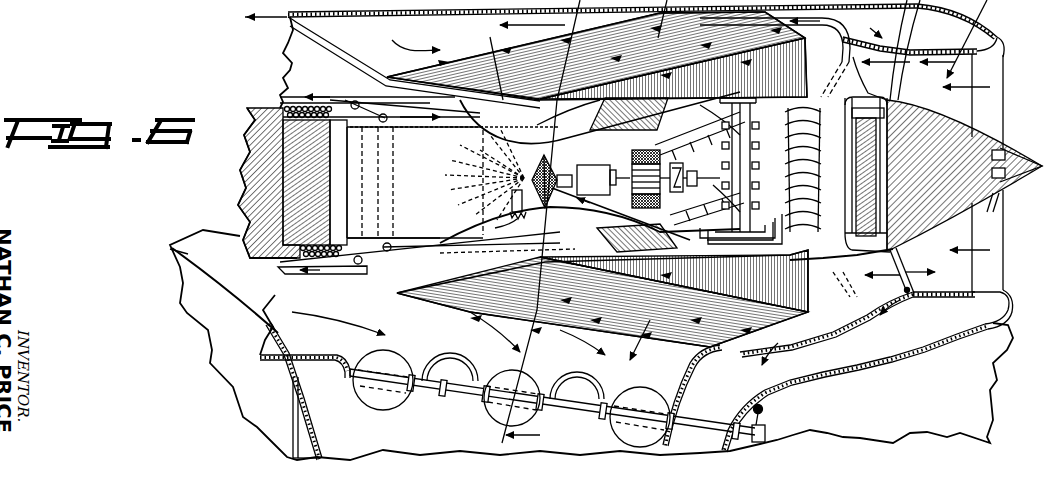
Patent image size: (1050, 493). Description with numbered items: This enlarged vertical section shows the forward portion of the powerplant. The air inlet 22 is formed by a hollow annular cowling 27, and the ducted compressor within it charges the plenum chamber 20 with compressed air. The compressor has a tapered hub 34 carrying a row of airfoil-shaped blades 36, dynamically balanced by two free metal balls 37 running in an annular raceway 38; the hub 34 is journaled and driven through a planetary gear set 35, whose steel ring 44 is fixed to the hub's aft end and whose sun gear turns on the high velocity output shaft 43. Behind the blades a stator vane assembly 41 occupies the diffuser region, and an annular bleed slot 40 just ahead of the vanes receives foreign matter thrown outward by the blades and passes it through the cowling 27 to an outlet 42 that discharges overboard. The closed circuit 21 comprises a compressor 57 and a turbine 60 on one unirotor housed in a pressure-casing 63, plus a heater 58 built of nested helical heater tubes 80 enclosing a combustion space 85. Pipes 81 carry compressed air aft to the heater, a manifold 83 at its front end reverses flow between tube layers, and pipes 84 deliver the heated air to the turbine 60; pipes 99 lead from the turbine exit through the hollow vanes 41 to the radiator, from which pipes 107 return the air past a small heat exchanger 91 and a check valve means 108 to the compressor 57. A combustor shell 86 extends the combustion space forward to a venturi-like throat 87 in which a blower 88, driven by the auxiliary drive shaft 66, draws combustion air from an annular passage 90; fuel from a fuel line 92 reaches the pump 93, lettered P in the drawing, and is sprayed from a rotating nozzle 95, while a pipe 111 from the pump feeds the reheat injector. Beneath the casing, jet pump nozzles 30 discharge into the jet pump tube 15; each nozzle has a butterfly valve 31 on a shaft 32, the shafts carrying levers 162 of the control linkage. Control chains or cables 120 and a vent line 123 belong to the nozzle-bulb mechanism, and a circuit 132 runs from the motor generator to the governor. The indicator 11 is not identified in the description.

The section line 11 is at (531, 445).
The jet pump tube 15 is at (298, 410).
The plenum chamber 20 is at (288, 66).
The closed circuit means 21 is at (389, 31).
The air inlet 22 is at (1005, 312).
The cowling 27 is at (996, 32).
The jet pump nozzles 30 is at (485, 408).
The butterfly valve 31 is at (540, 438).
The shafts 32 is at (548, 378).
The hub 34 is at (985, 135).
The planetary gear set 35 is at (864, 118).
The blades 36 is at (935, 258).
The free metal balls 37 is at (1037, 147).
The annular raceway 38 is at (991, 212).
The annular bleed slot 40 is at (893, 52).
The stator vane assembly 41 is at (888, 330).
The outlet 42 is at (775, 383).
The high velocity output shaft 43 is at (778, 226).
The ring 44 is at (898, 76).
The compressor 57 is at (806, 290).
The heater 58 is at (275, 148).
The turbine 60 is at (768, 140).
The pressure-casing 63 is at (822, 85).
The auxiliary drive shaft 66 is at (665, 179).
The heater tubes 80 is at (326, 268).
The pipes 81 is at (340, 95).
The manifold 83 is at (370, 97).
The pipes 84 is at (410, 130).
The combustion space 85 is at (270, 262).
The combustor shell 86 is at (421, 189).
The venturi-like throat 87 is at (470, 160).
The blower 88 is at (528, 222).
The annular passage 90 is at (478, 29).
The heat exchanger 91 is at (655, 177).
The fuel line 92 is at (600, 325).
The pump 93 is at (603, 310).
The nozzle 95 is at (538, 142).
The pipes 99 is at (840, 375).
The pipes 107 is at (478, 120).
The check valve means 108 is at (745, 188).
The pipe 111 is at (360, 46).
The flexible control elements 120 is at (205, 6).
The vent line 123 is at (172, 1).
The circuit 132 is at (720, 255).
The levers 162 is at (768, 432).
The pump P is at (603, 180).